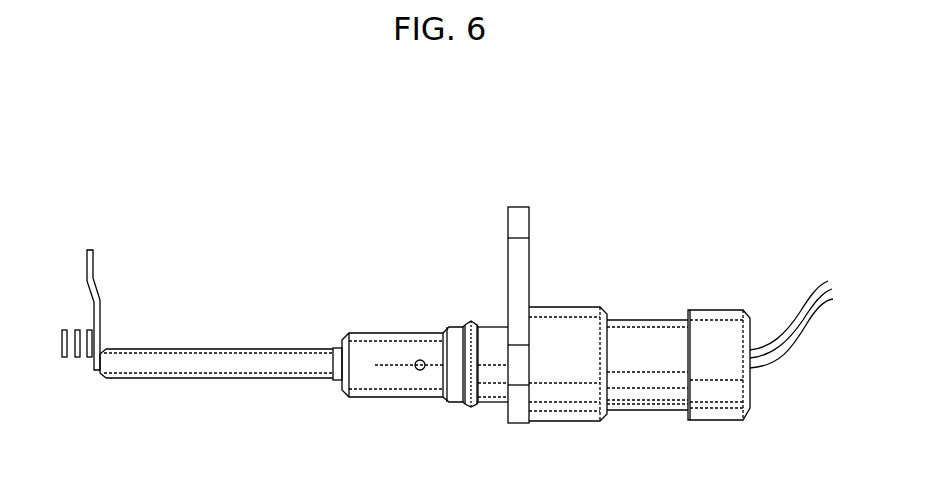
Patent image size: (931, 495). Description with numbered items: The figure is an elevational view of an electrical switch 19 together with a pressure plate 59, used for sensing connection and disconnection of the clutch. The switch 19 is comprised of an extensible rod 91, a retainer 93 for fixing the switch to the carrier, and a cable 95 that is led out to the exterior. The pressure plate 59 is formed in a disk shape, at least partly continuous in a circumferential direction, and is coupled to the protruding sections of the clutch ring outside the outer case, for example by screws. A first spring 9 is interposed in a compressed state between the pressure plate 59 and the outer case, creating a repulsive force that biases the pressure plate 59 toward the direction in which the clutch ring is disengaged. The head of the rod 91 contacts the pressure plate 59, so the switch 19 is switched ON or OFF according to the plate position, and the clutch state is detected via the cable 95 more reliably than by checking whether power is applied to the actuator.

The switch 19 is at (296, 167).
The extensible rod 91 is at (232, 349).
The retainer 93 is at (529, 220).
The cable 95 is at (790, 356).
The first spring 9 is at (72, 360).
The pressure plate 59 is at (95, 370).